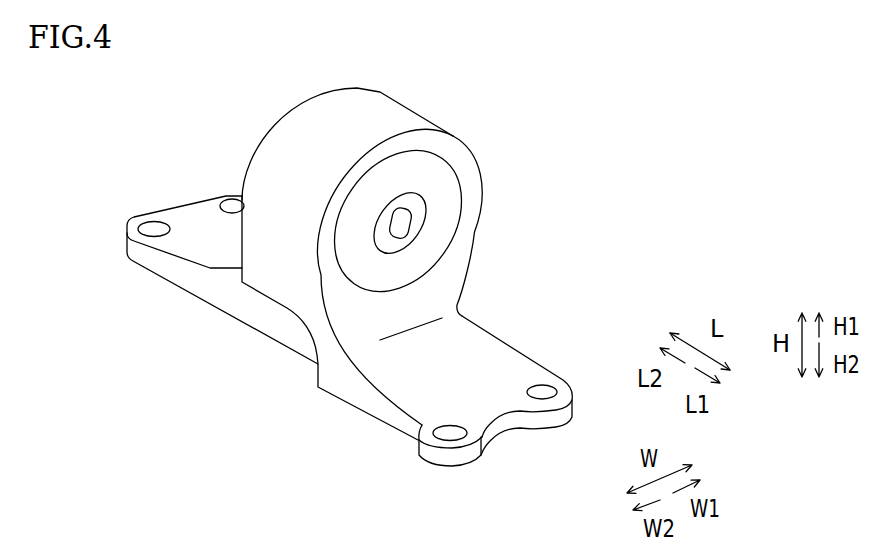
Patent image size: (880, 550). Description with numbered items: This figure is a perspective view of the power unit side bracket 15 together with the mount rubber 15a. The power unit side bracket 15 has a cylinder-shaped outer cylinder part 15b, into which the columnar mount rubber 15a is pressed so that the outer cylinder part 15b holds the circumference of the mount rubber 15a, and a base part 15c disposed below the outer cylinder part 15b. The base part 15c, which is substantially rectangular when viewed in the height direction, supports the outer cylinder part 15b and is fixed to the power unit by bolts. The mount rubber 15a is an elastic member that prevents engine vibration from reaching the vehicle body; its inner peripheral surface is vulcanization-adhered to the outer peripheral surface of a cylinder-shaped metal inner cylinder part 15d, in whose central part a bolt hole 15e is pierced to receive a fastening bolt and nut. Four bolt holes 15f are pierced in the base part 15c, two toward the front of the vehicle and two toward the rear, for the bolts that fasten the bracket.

The power unit side bracket 15 is at (557, 90).
The mount rubber 15a is at (443, 170).
The outer cylinder part 15b is at (390, 118).
The base part 15c is at (490, 350).
The inner cylinder part 15d is at (400, 243).
The bolt hole 15e is at (398, 223).
The bolt holes 15f is at (153, 234).